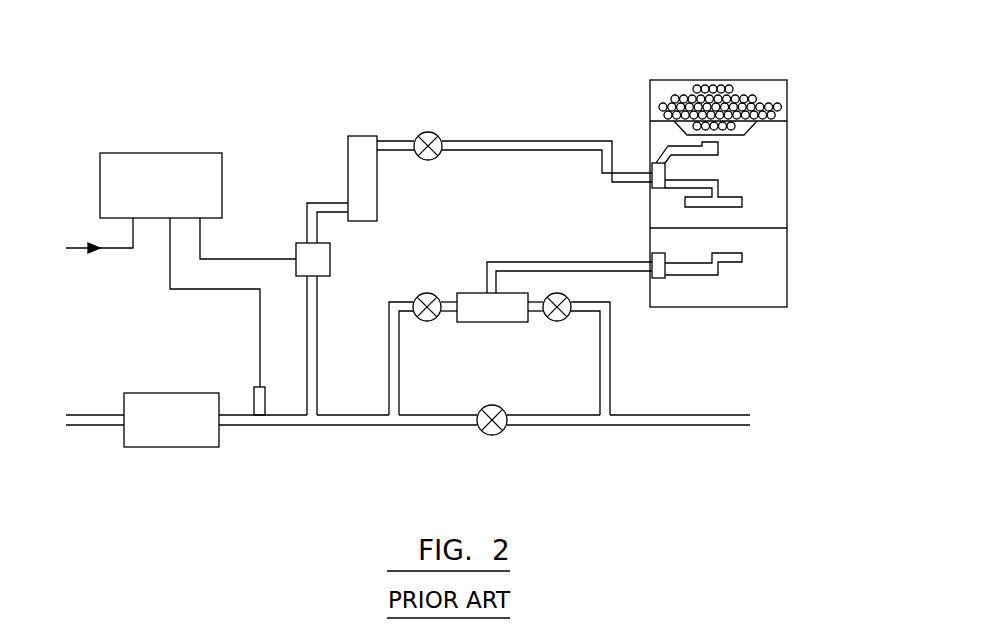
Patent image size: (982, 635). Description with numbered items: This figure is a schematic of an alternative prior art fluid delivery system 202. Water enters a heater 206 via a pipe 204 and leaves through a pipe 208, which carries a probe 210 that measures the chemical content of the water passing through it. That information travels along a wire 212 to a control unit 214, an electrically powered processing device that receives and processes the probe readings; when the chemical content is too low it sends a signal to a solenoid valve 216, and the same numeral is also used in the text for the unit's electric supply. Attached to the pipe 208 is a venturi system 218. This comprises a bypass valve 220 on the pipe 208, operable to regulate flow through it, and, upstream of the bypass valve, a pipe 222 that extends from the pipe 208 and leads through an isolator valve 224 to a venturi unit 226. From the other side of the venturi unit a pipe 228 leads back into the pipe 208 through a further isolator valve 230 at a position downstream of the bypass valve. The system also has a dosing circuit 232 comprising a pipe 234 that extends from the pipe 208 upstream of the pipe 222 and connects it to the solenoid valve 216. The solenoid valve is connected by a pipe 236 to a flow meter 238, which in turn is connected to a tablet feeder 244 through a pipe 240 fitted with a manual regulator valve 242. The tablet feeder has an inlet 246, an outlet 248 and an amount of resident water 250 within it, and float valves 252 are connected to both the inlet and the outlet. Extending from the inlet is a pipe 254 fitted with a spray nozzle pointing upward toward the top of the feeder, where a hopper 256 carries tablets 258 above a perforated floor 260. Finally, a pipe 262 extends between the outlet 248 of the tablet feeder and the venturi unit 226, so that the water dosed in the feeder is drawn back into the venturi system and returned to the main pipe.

The system 202 is at (555, 126).
The pipe 204 is at (88, 427).
The heater 206 is at (155, 432).
The pipe 208 is at (293, 426).
The probe 210 is at (258, 402).
The wire 212 is at (260, 330).
The control unit 214 is at (144, 197).
The solenoid valve 216 is at (320, 259).
The venturi system 218 is at (549, 436).
The bypass valve 220 is at (490, 434).
The pipe 222 is at (393, 378).
The isolator valve 224 is at (428, 293).
The venturi unit 226 is at (492, 310).
The pipe 228 is at (606, 362).
The isolator valve 230 is at (557, 321).
The dosing circuit 232 is at (393, 128).
The pipe 234 is at (320, 352).
The pipe 236 is at (322, 205).
The flow meter 238 is at (370, 173).
The pipe 240 is at (497, 148).
The manual regulator valve 242 is at (428, 132).
The tablet feeder 244 is at (805, 125).
The inlet 246 is at (651, 165).
The outlet 248 is at (652, 257).
The resident water 250 is at (745, 288).
The float valves 252 is at (742, 202).
The pipe 254 is at (718, 152).
The hopper 256 is at (768, 90).
The tablets 258 is at (697, 85).
The perforated floor 260 is at (740, 135).
The pipe 262 is at (550, 263).